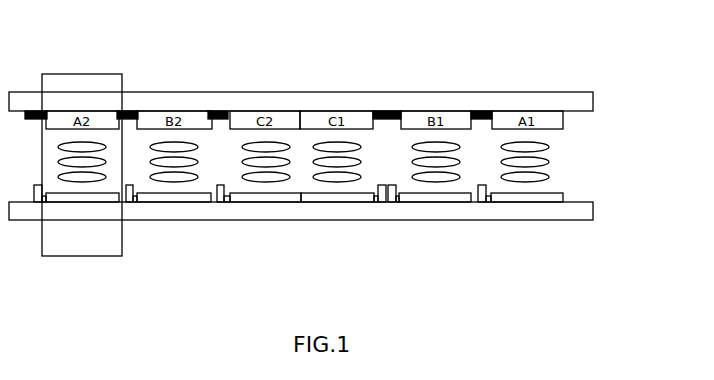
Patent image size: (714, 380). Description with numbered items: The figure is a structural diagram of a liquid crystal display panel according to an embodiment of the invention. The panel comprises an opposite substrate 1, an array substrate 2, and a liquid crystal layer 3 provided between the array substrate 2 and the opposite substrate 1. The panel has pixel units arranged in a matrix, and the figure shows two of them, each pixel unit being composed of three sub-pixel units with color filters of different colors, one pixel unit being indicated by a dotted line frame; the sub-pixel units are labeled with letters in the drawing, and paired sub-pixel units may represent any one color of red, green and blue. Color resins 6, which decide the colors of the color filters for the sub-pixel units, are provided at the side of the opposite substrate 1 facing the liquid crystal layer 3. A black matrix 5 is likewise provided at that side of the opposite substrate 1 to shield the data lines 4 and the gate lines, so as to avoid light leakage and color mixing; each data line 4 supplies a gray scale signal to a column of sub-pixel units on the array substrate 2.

The opposite substrate 1 is at (314, 70).
The array substrate 2 is at (315, 243).
The liquid crystal layer 3 is at (549, 162).
The data line 4 is at (260, 238).
The black matrix 5 is at (258, 84).
The color resin 6 is at (99, 154).